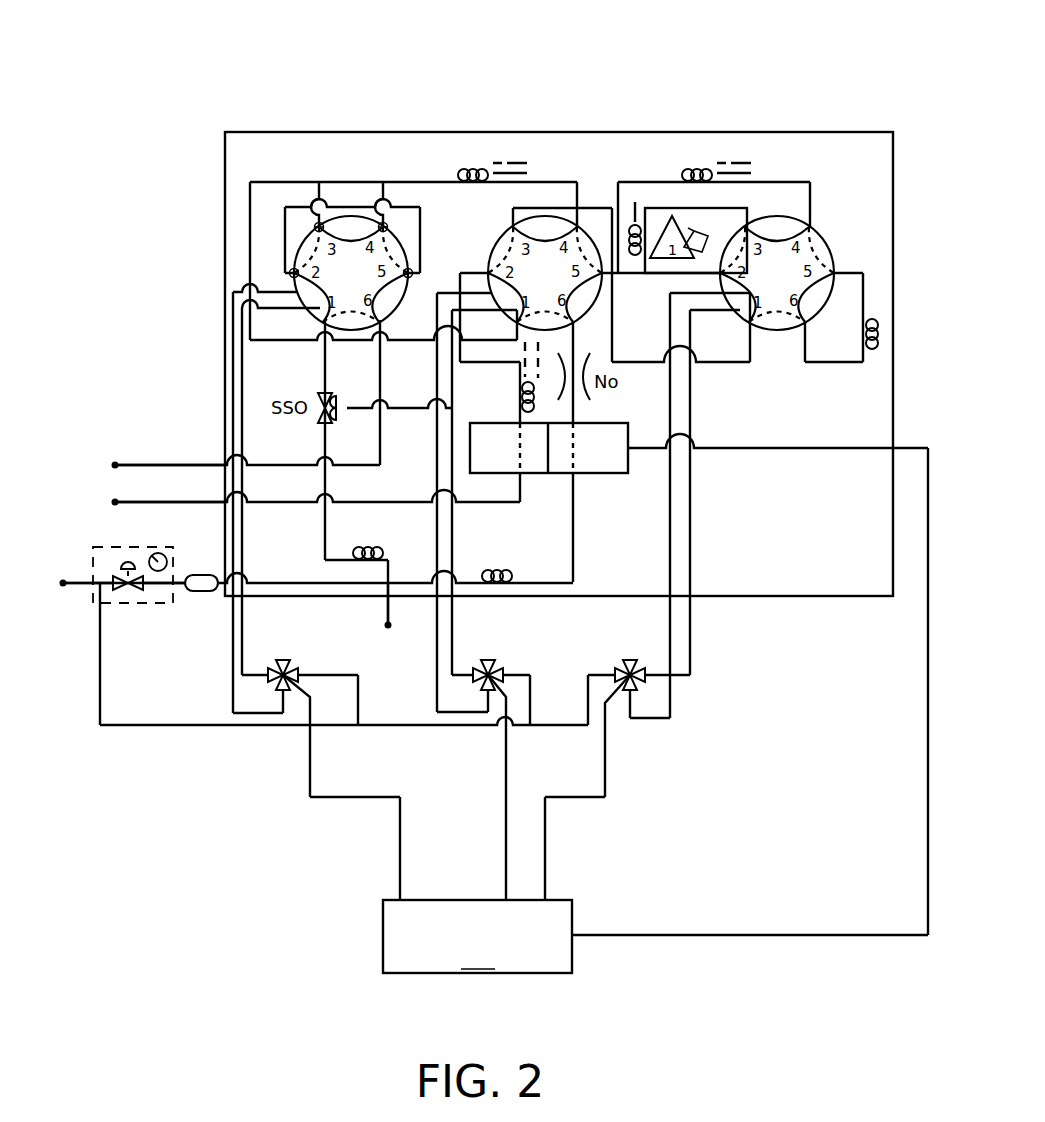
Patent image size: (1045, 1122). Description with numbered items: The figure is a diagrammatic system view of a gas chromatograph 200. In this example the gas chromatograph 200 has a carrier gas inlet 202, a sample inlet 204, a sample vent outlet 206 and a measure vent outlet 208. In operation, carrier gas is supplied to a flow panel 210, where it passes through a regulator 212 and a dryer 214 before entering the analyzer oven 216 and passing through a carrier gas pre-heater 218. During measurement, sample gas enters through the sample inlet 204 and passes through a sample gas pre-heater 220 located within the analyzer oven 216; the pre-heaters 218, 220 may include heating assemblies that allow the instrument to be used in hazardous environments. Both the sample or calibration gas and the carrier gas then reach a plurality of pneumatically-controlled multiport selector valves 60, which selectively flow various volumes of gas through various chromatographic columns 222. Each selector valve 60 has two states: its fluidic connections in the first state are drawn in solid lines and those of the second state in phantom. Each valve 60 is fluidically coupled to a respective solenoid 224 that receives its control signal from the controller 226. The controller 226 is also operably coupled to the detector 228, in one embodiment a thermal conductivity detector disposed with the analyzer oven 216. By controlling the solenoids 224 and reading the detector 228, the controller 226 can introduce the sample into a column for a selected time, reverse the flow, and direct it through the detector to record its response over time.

The gas chromatograph 200 is at (835, 92).
The carrier gas inlet 202 is at (63, 583).
The sample inlet 204 is at (388, 625).
The sample vent outlet 206 is at (115, 465).
The measure vent outlet 208 is at (115, 502).
The flow panel 210 is at (167, 562).
The regulator 212 is at (118, 590).
The dryer 214 is at (200, 593).
The analyzer oven 216 is at (733, 598).
The carrier gas pre-heater 218 is at (520, 570).
The sample gas pre-heater 220 is at (385, 547).
The chromatographic columns 222 is at (458, 177).
The solenoid 224 is at (283, 659).
The controller 226 is at (477, 936).
The detector 228 is at (607, 474).
The pneumatically-controlled multiport selector valve 60 is at (398, 300).